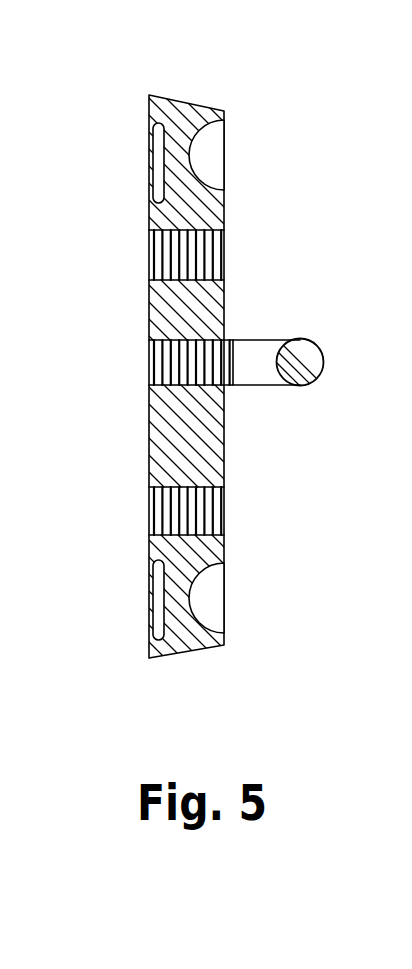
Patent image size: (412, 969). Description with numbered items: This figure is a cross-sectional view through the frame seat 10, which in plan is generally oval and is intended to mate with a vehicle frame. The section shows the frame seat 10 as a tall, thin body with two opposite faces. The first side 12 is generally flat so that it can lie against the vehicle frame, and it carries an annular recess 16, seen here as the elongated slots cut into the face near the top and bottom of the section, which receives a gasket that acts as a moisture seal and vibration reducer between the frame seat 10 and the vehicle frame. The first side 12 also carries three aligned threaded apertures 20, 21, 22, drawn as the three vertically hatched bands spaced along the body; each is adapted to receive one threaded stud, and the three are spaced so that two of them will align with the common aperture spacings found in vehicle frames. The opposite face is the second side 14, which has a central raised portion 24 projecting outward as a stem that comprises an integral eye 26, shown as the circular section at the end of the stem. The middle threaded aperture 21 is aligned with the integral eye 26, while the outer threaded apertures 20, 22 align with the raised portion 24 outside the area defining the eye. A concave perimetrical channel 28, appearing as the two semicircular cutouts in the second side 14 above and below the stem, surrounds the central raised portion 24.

The frame seat 10 is at (207, 105).
The first side 12 is at (149, 421).
The second side 14 is at (224, 618).
The annular recess 16 is at (156, 162).
The threaded aperture 20 is at (149, 256).
The threaded aperture 21 is at (155, 362).
The threaded aperture 22 is at (153, 507).
The central raised portion 24 is at (257, 340).
The integral eye 26 is at (322, 348).
The concave perimetrical channel 28 is at (192, 158).